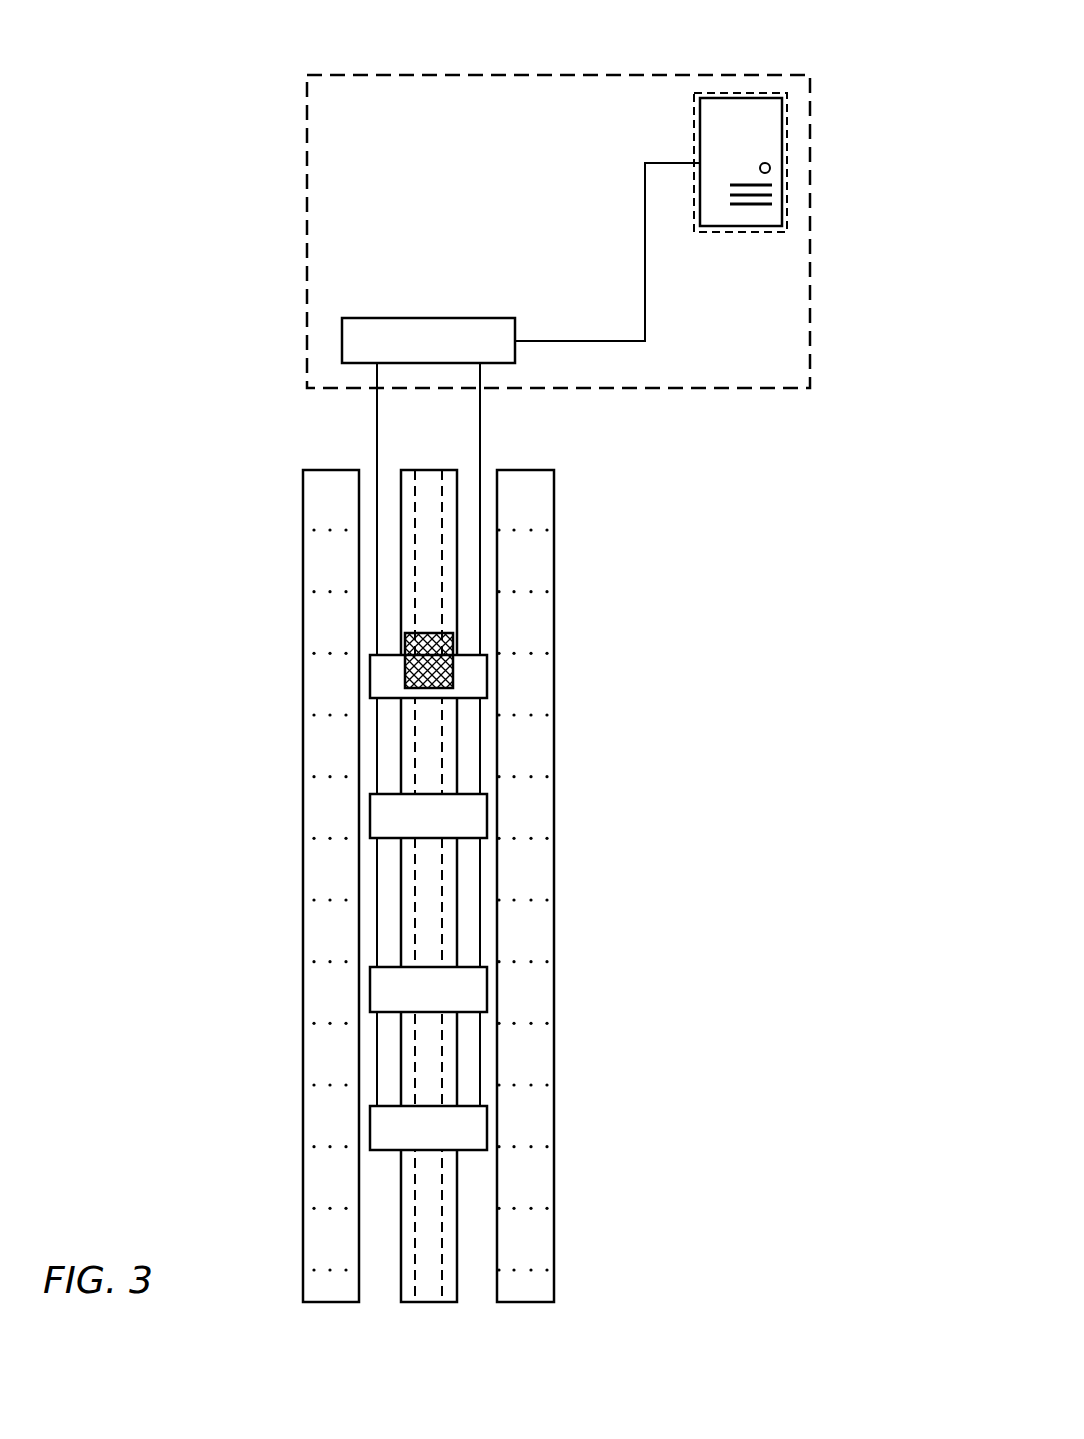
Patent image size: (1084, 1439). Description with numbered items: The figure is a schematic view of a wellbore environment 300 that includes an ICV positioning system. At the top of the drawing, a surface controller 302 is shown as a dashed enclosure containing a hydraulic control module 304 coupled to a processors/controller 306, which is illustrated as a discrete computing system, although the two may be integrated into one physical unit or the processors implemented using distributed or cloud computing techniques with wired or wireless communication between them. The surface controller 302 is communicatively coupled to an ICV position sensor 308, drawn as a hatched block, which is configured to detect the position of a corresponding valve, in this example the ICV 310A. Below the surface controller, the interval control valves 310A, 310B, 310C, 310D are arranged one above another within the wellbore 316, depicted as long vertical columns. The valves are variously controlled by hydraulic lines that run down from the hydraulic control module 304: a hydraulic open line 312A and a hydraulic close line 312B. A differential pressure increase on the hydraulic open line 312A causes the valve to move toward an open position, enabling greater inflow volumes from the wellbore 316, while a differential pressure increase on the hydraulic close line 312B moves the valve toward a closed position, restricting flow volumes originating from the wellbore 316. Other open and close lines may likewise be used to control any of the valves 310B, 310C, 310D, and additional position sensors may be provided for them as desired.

The wellbore environment 300 is at (430, 34).
The surface controller 302 is at (307, 232).
The hydraulic control module 304 is at (342, 340).
The processors/controller 306 is at (740, 142).
The ICV position sensor 308 is at (455, 660).
The ICV 310A is at (370, 675).
The ICV 310B is at (370, 815).
The ICV 310C is at (370, 988).
The ICV 310D is at (370, 1125).
The hydraulic open line 312A is at (493, 436).
The hydraulic close line 312B is at (377, 436).
The wellbore 316 is at (555, 888).